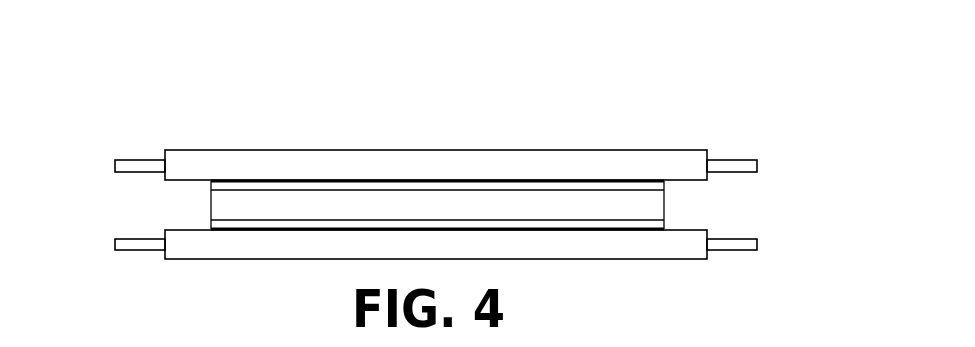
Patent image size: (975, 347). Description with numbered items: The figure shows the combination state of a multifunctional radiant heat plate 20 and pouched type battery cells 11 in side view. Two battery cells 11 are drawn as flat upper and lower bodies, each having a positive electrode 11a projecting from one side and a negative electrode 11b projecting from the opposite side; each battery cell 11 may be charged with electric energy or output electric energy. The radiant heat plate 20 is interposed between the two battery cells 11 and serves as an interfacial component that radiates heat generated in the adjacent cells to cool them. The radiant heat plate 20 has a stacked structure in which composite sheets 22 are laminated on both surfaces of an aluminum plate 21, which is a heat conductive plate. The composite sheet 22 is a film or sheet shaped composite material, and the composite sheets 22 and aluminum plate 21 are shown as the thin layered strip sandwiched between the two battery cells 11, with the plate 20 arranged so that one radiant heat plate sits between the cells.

The battery cell 11 is at (567, 150).
The positive electrode 11a is at (132, 160).
The negative electrode 11b is at (743, 160).
The radiant heat plate 20 is at (541, 125).
The aluminum plate 21 is at (287, 200).
The composite sheet 22 is at (381, 185).